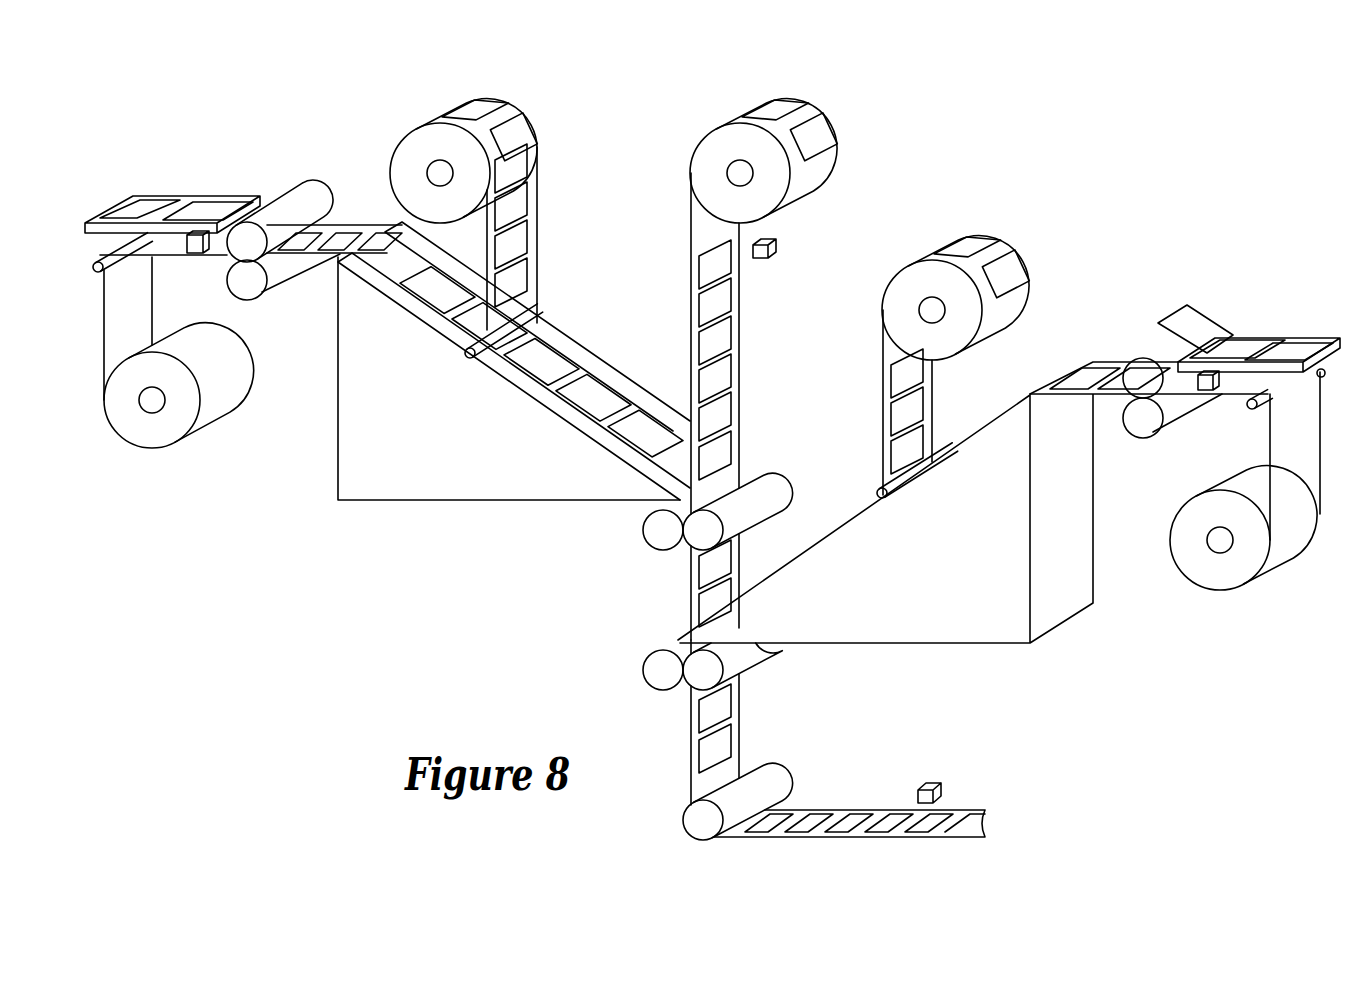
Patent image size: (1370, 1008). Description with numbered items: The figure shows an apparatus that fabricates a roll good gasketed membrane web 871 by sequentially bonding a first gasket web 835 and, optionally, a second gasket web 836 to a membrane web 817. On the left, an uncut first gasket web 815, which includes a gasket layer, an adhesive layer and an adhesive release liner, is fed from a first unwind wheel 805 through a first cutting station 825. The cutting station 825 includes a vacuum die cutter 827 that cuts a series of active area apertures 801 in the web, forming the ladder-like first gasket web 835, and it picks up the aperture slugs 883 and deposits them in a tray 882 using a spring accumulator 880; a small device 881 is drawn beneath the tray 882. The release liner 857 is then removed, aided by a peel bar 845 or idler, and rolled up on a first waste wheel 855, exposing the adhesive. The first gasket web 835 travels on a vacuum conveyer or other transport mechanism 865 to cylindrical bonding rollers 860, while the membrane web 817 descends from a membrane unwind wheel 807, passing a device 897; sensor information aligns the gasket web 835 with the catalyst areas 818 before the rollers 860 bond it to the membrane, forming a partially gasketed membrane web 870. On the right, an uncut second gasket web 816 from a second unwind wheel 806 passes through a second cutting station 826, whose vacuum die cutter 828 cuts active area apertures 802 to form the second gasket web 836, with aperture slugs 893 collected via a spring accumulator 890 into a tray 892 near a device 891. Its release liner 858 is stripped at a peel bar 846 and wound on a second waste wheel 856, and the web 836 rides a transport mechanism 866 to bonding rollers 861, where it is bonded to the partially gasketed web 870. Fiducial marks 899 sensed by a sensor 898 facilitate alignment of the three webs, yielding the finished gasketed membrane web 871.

The active area apertures 801 is at (357, 237).
The active area apertures 802 is at (1113, 376).
The first unwind wheel 805 is at (160, 435).
The second unwind wheel 806 is at (1193, 565).
The membrane unwind wheel 807 is at (710, 157).
The uncut first gasket web 815 is at (133, 317).
The uncut second gasket web 816 is at (1287, 423).
The membrane web 817 is at (737, 308).
The catalyst areas 818 is at (725, 382).
The first cutting station 825 is at (290, 266).
The second cutting station 826 is at (1124, 402).
The vacuum die cutter 827 is at (302, 203).
The vacuum die cutter 828 is at (1140, 367).
The first gasket web 835 is at (418, 310).
The second gasket web 836 is at (1080, 367).
The peel bar 845 is at (543, 311).
The peel bar 846 is at (878, 492).
The first waste wheel 855 is at (407, 172).
The second waste wheel 856 is at (910, 282).
The release liner 857 is at (530, 213).
The release liner 858 is at (928, 392).
The bonding rollers 860 is at (690, 542).
The bonding rollers 861 is at (690, 682).
The transport mechanism 865 is at (478, 493).
The transport mechanism 866 is at (913, 630).
The partially gasketed membrane web 870 is at (703, 590).
The gasketed membrane web 871 is at (735, 713).
The spring accumulator 880 is at (267, 198).
The first sensor 881 is at (195, 252).
The tray 882 is at (147, 198).
The aperture slugs 883 is at (207, 205).
The spring accumulator 890 is at (1198, 323).
The second sensor 891 is at (1207, 388).
The tray 892 is at (1302, 338).
The aperture slugs 893 is at (1247, 340).
The first reader 897 is at (775, 245).
The sensor 898 is at (940, 777).
The fiducial marks 899 is at (858, 830).